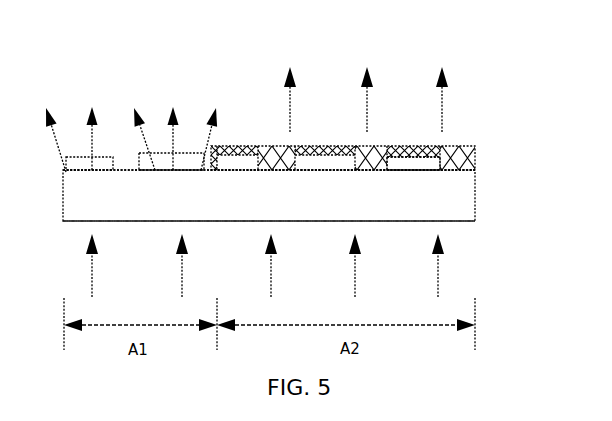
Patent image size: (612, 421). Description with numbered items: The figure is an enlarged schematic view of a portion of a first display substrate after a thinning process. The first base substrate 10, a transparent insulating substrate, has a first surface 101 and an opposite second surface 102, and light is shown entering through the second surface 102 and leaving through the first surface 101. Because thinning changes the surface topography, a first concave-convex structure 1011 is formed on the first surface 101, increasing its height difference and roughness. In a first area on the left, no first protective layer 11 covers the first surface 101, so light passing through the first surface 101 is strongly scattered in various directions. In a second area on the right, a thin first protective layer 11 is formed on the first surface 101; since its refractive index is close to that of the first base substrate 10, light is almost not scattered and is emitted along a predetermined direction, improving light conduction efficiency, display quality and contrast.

The first base substrate 10 is at (467, 198).
The first surface 101 is at (462, 170).
The second surface 102 is at (455, 221).
The first protective layer 11 is at (470, 157).
The first concave-convex structure 1011 is at (437, 162).